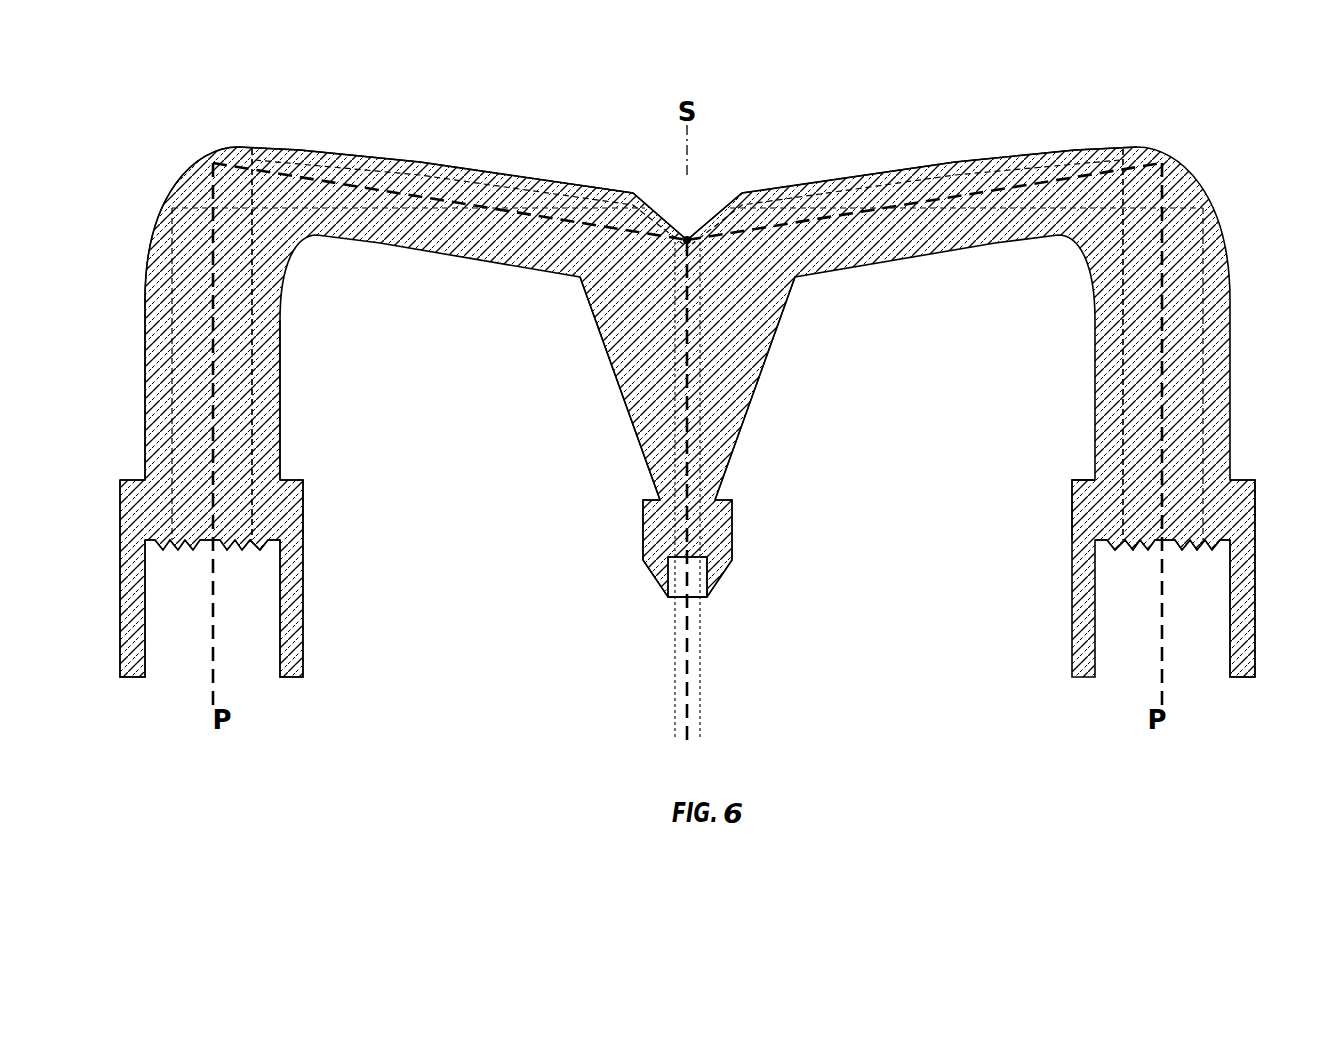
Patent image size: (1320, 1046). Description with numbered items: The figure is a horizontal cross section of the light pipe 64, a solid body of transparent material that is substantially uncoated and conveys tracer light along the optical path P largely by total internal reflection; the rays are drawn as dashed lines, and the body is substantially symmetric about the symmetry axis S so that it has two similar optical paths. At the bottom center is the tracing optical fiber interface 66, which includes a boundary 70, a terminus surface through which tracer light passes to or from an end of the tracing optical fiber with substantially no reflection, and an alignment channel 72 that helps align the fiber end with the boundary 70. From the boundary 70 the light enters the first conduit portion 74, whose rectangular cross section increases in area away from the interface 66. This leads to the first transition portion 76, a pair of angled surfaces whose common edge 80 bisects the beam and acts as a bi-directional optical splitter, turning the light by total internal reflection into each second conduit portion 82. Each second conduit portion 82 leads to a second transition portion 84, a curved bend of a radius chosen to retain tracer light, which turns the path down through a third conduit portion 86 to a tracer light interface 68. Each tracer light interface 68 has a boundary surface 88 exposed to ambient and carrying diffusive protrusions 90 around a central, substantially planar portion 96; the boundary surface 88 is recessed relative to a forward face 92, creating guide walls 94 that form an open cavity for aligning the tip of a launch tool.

The light pipe 64 is at (962, 92).
The tracing optical fiber interface 66 is at (724, 556).
The tracer light interface 68 is at (1257, 517).
The boundary 70 is at (700, 549).
The alignment channel 72 is at (680, 600).
The first conduit portion 74 is at (745, 343).
The first transition portion 76 is at (646, 145).
The common edge 80 is at (690, 238).
The second conduit portion 82 is at (411, 162).
The second transition portion 84 is at (226, 148).
The third conduit portion 86 is at (262, 400).
The boundary surface 88 is at (286, 546).
The diffusive protrusions 90 is at (262, 548).
The forward face 92 is at (290, 677).
The guide walls 94 is at (148, 620).
The central substantially planar portion 96 is at (222, 540).